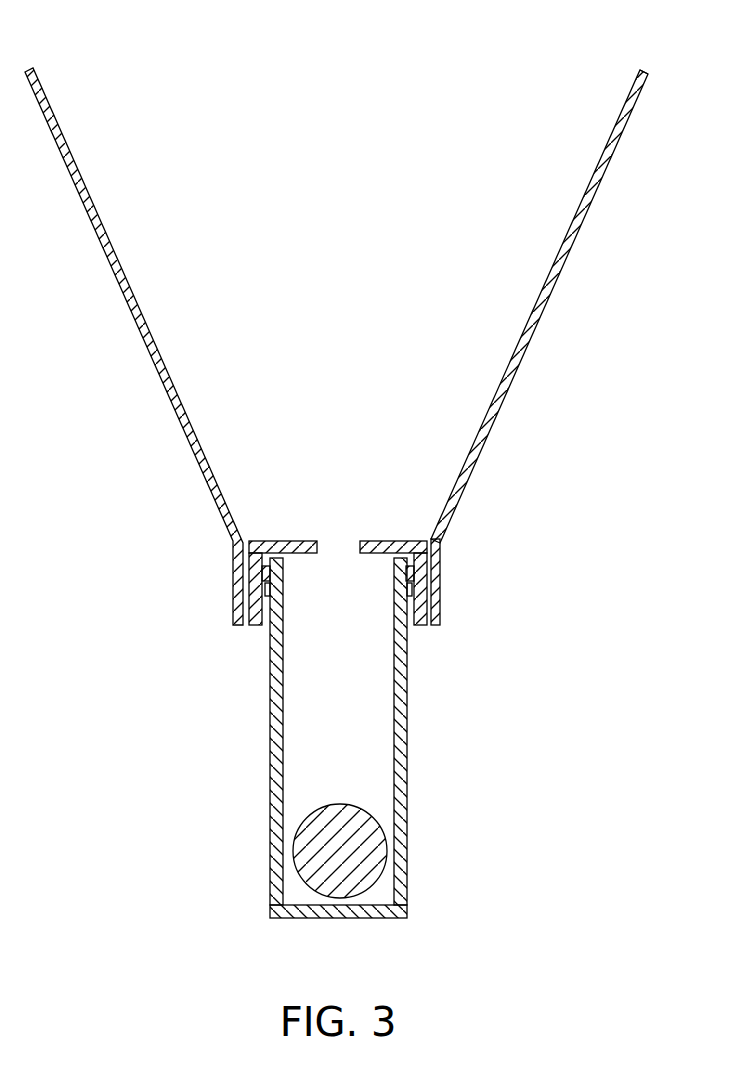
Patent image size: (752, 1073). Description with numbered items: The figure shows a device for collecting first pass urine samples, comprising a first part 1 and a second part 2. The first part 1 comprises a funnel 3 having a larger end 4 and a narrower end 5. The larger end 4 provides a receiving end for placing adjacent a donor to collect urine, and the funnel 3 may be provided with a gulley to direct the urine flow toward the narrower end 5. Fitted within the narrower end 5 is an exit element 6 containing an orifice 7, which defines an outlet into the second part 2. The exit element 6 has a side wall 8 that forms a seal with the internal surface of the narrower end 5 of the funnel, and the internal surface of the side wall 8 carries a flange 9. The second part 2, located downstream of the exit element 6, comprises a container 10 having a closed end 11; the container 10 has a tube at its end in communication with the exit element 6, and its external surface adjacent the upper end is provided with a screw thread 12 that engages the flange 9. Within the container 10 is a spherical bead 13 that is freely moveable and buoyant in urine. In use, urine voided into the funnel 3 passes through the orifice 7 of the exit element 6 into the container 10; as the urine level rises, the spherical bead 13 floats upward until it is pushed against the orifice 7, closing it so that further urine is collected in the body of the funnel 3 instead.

The first part 1 is at (336, 321).
The second part 2 is at (366, 766).
The funnel 3 is at (594, 201).
The larger end 4 is at (641, 69).
The narrower end 5 is at (442, 601).
The exit element 6 is at (385, 541).
The orifice 7 is at (339, 545).
The side wall 8 is at (417, 626).
The flange 9 is at (268, 590).
The container 10 is at (408, 712).
The closed end 11 is at (342, 919).
The screw thread 12 is at (264, 573).
The spherical bead 13 is at (342, 804).